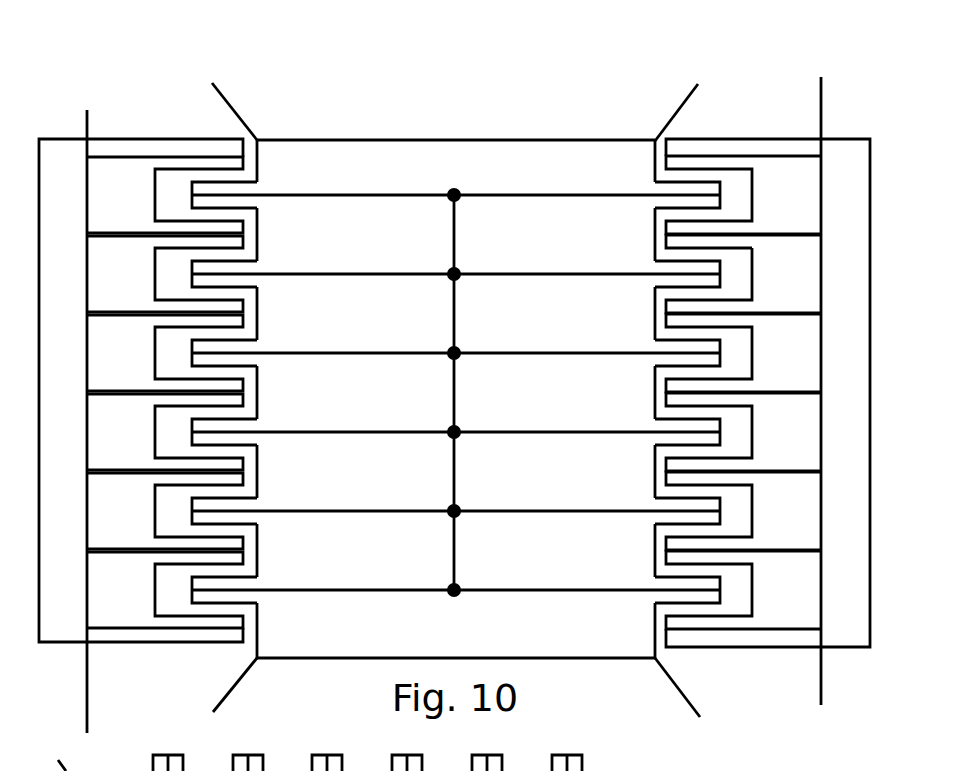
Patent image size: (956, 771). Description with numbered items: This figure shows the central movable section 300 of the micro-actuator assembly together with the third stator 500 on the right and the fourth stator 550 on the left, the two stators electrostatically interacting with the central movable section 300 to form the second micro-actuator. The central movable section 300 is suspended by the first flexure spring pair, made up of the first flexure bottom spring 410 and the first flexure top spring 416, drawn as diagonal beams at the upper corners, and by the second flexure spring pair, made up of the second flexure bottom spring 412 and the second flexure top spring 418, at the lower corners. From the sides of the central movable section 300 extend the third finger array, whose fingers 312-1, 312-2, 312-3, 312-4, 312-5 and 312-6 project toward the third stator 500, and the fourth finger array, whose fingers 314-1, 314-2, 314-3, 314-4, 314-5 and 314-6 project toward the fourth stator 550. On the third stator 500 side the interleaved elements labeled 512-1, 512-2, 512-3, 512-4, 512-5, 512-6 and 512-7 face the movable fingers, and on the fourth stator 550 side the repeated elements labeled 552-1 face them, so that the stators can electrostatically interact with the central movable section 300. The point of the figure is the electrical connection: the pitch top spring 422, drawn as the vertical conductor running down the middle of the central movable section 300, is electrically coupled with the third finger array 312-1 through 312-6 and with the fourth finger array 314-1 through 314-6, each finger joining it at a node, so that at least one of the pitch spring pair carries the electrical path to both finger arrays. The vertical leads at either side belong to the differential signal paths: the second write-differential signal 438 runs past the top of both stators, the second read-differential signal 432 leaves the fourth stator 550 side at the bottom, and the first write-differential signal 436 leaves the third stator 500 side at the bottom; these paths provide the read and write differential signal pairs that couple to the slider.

The central movable section 300 is at (379, 181).
The finger of third finger array 312-1 is at (637, 203).
The finger of third finger array 312-2 is at (640, 278).
The finger of third finger array 312-3 is at (645, 352).
The finger of third finger array 312-4 is at (620, 431).
The finger of third finger array 312-5 is at (620, 510).
The finger of third finger array 312-6 is at (620, 589).
The finger of fourth finger array 314-1 is at (287, 197).
The finger of fourth finger array 314-2 is at (287, 275).
The finger of fourth finger array 314-3 is at (289, 351).
The finger of fourth finger array 314-4 is at (290, 431).
The finger of fourth finger array 314-5 is at (290, 510).
The finger of fourth finger array 314-6 is at (290, 589).
The first flexure bottom spring 410 is at (230, 105).
The second flexure bottom spring 412 is at (240, 679).
The first flexure top spring 416 is at (680, 105).
The second flexure top spring 418 is at (669, 676).
The pitch top spring 422 is at (484, 257).
The second read-differential signal 432 is at (88, 706).
The first write-differential signal 436 is at (820, 657).
The second write-differential signal 438 is at (88, 126).
The third stator 500 is at (838, 193).
The right fixed electrode finger 512-1 is at (795, 157).
The right fixed electrode finger 512-2 is at (795, 318).
The right fixed electrode finger 512-3 is at (788, 240).
The right fixed electrode finger 512-4 is at (812, 393).
The right fixed electrode finger 512-5 is at (770, 470).
The right fixed electrode finger 512-6 is at (780, 551).
The right fixed electrode finger 512-7 is at (757, 630).
The fourth stator 550 is at (56, 196).
The left fixed electrode finger 552-1 is at (124, 156).